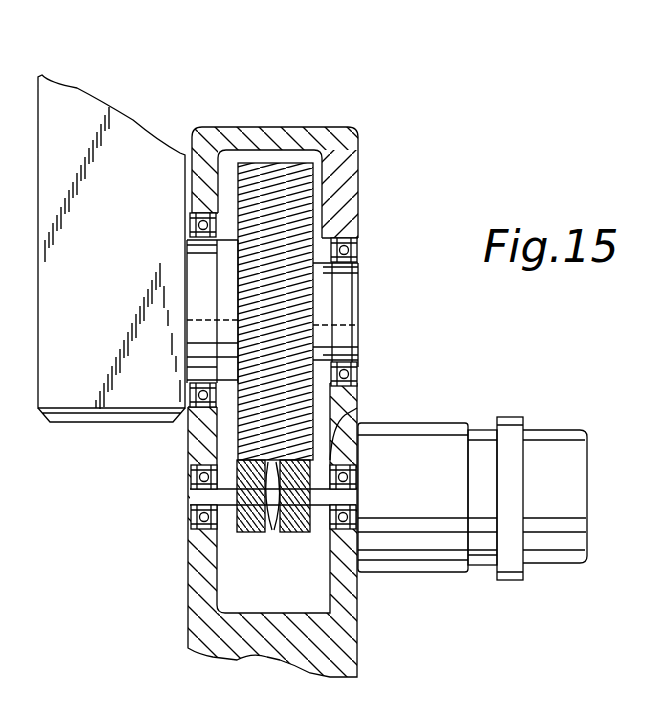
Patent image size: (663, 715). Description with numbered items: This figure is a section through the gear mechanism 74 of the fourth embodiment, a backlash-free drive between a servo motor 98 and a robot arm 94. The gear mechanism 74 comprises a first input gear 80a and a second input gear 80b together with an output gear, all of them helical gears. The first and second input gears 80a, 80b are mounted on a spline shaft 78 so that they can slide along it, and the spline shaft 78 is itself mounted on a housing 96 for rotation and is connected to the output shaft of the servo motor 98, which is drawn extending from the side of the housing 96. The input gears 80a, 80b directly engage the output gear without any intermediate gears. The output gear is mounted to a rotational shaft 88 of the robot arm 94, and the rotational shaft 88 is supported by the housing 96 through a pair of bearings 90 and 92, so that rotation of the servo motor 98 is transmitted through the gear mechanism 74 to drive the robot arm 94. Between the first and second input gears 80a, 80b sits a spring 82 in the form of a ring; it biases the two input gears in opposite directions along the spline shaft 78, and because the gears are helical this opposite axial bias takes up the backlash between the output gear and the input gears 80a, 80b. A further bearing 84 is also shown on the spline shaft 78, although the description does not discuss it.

The gear mechanism 74 is at (291, 88).
The spline shaft 78 is at (192, 502).
The first input gear 80a is at (240, 543).
The second input gear 80b is at (297, 532).
The spring 82 is at (268, 535).
The upper bearing 84 is at (193, 477).
The rotational shaft 88 is at (358, 280).
The bearing 90 is at (343, 240).
The bearing 92 is at (197, 230).
The robot arm 94 is at (117, 122).
The housing 96 is at (358, 140).
The servo motor 98 is at (566, 430).